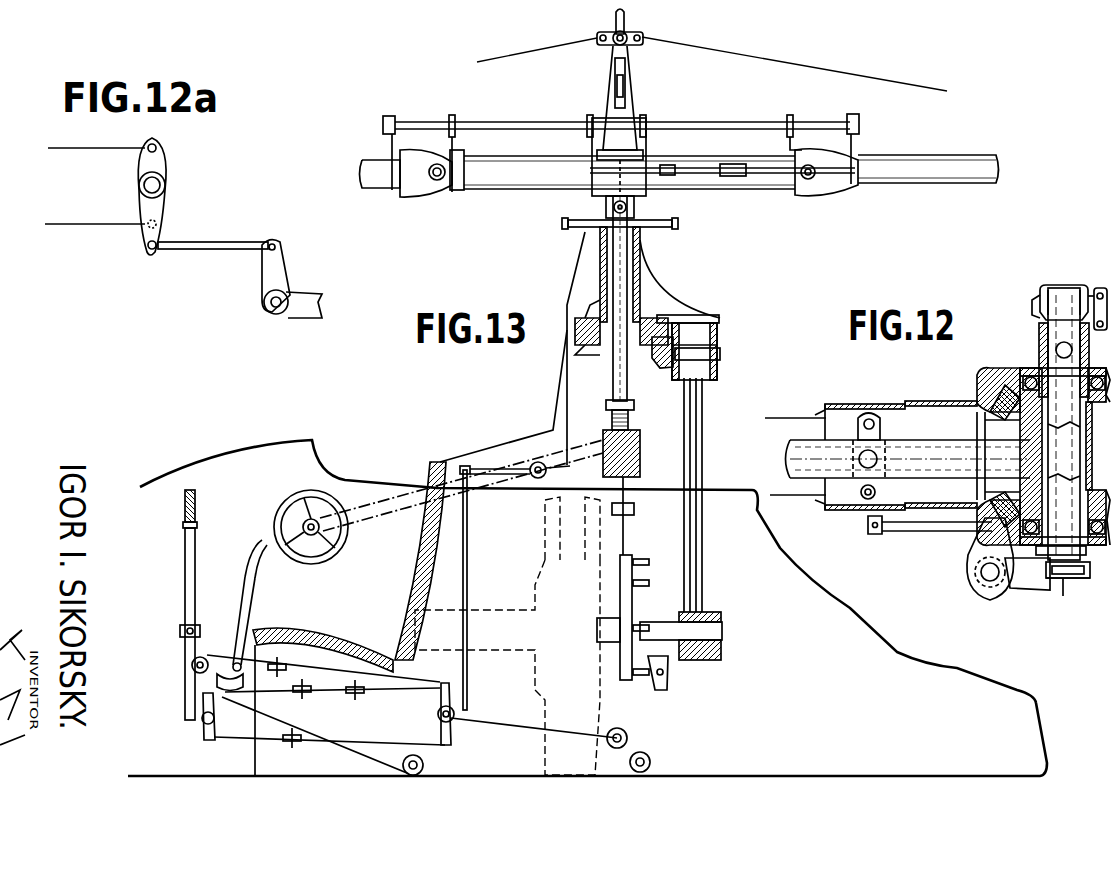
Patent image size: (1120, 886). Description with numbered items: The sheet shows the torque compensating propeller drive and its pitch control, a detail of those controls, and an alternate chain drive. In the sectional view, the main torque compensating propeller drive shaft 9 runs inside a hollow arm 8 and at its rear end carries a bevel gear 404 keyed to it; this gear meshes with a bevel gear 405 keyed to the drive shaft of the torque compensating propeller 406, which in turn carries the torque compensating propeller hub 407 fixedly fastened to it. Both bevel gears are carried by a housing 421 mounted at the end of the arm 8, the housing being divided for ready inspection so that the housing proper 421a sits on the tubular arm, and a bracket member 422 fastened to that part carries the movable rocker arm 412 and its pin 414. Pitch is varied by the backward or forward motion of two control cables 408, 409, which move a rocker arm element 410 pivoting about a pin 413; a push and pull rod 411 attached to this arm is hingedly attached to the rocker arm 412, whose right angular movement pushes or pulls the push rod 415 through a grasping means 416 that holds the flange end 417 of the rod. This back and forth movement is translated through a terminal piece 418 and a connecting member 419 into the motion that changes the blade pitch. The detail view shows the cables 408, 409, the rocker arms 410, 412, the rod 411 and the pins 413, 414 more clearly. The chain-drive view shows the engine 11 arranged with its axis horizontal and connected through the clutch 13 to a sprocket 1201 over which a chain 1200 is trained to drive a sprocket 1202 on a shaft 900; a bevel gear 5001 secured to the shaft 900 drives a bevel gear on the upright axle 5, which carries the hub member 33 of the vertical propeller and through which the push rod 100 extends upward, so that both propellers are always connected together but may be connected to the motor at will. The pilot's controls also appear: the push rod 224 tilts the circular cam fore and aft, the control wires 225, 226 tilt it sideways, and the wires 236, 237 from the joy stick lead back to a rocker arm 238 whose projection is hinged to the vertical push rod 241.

In FIG. 13, the upright axle 5 is at (640, 209).
In FIG. 12, the hollow arm 8 is at (880, 415).
In FIG. 12, the main torque compensating propeller drive shaft 9 is at (830, 448).
In FIG. 13, the motor or power plant 11 is at (556, 596).
In FIG. 13, the clutch 13 is at (630, 578).
In FIG. 13, the hub member 33 is at (522, 186).
In FIG. 13, the push rod 100 is at (623, 280).
In FIG. 13, the push rod 224 is at (566, 366).
In FIG. 13, the control wire 225 is at (305, 693).
In FIG. 13, the control wire 226 is at (216, 740).
In FIG. 13, the wire 236 is at (336, 652).
In FIG. 13, the wire 237 is at (364, 718).
In FIG. 13, the rocker arm 238 is at (443, 683).
In FIG. 13, the vertical push rod 241 is at (468, 560).
In FIG. 12, the bevel gear 404 is at (1012, 388).
In FIG. 12, the bevel gear 405 is at (1018, 444).
In FIG. 12, the drive shaft of the torque compensating propeller 406 is at (1045, 358).
In FIG. 12, the torque compensating propeller hub 407 is at (1052, 338).
In FIG. 12A, the control cable 408 is at (101, 226).
In FIG. 12, the control cable 408 is at (797, 503).
In FIG. 12A, the control cable 409 is at (88, 152).
In FIG. 12, the control cable 409 is at (794, 416).
In FIG. 12A, the rocker arm element 410 is at (170, 211).
In FIG. 12, the rocker arm element 410 is at (870, 532).
In FIG. 12A, the push and pull rod 411 is at (212, 243).
In FIG. 12, the push and pull rod 411 is at (928, 540).
In FIG. 12A, the movable rocker arm 412 is at (327, 304).
In FIG. 12, the movable rocker arm 412 is at (1016, 600).
In FIG. 12, the pin 413 is at (908, 480).
In FIG. 12A, the pin 414 is at (293, 291).
In FIG. 12, the pin 414 is at (985, 578).
In FIG. 12, the push rod 415 is at (1056, 553).
In FIG. 12, the means for grasping the flange end of the push rod 416 is at (1072, 585).
In FIG. 12, the flange end of the push rod 417 is at (1085, 590).
In FIG. 12, the terminal piece 418 is at (1060, 288).
In FIG. 12, the connecting member 419 is at (1096, 290).
In FIG. 12, the housing 421 is at (975, 428).
In FIG. 12, the housing proper 421a is at (992, 402).
In FIG. 12, the bracket member 422 is at (980, 592).
In FIG. 13, the shaft 900 is at (720, 360).
In FIG. 13, the chain 1200 is at (706, 602).
In FIG. 13, the sprocket 1201 is at (718, 640).
In FIG. 13, the sprocket 1202 is at (703, 386).
In FIG. 13, the bevel gear 5001 is at (666, 369).